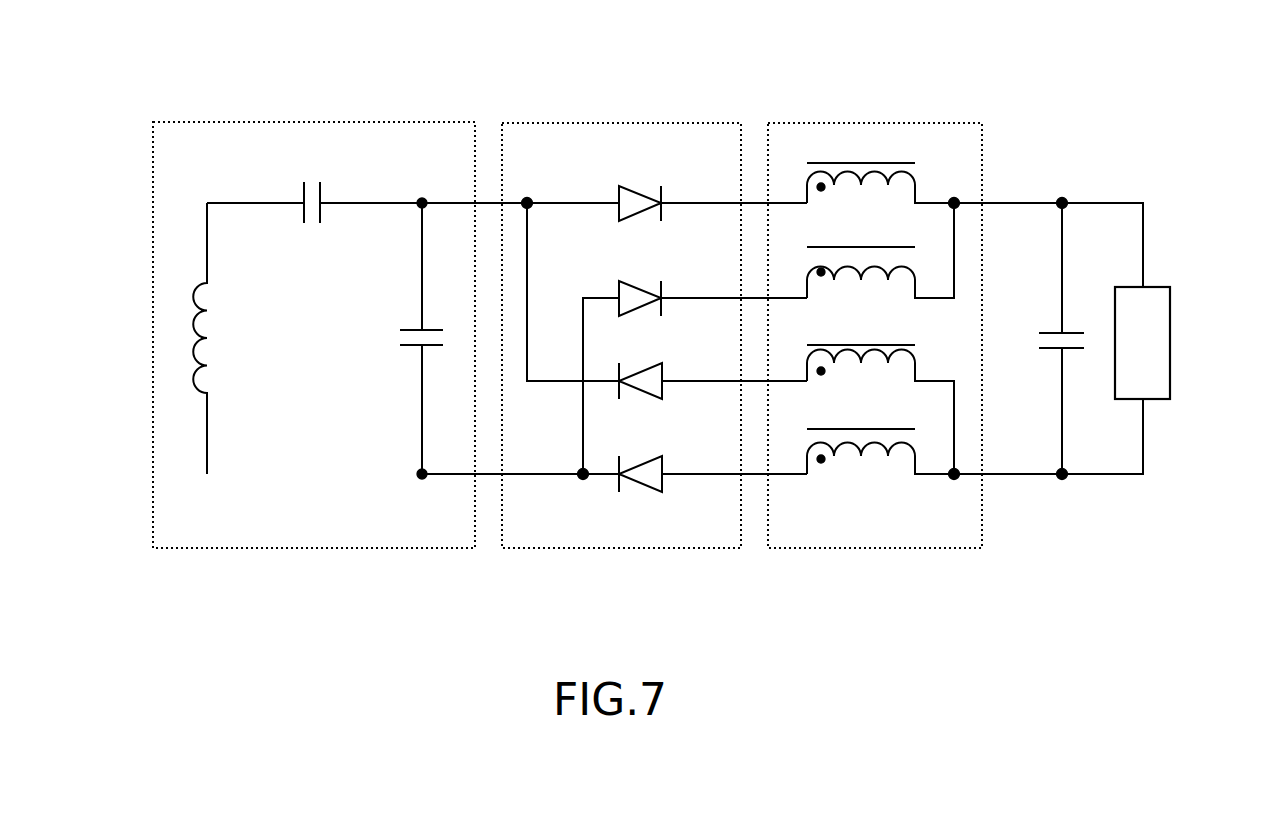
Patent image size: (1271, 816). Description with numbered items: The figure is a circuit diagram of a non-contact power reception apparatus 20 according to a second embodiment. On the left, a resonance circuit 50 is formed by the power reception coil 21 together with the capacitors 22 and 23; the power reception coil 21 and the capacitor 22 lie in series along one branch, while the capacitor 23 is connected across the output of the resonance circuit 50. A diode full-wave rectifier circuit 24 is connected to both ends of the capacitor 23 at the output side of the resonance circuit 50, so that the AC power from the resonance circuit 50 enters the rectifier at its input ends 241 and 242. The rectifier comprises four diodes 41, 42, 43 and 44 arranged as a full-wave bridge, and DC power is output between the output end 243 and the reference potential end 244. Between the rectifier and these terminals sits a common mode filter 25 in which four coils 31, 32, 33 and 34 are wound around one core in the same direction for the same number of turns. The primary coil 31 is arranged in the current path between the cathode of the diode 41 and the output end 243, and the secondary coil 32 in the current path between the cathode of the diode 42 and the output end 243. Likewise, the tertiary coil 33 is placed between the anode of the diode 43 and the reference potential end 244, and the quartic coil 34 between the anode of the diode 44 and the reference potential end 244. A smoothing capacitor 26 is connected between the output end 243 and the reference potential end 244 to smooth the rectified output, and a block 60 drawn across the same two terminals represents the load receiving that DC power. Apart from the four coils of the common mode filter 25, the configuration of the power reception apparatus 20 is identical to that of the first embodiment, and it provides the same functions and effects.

The power reception apparatus 20 is at (522, 52).
The resonance circuit 50 is at (311, 122).
The power reception coil 21 is at (185, 348).
The capacitor 22 is at (312, 226).
The capacitor 23 is at (385, 340).
The diode full-wave rectifier circuit 24 is at (636, 123).
The input end 241 is at (527, 196).
The input end 242 is at (583, 482).
The diode 41 is at (622, 186).
The diode 42 is at (622, 280).
The diode 43 is at (688, 348).
The diode 44 is at (670, 456).
The common mode filter 25 is at (893, 123).
The primary coil 31 is at (858, 178).
The secondary coil 32 is at (858, 272).
The tertiary coil 33 is at (858, 368).
The quartic coil 34 is at (858, 460).
The output end 243 is at (954, 196).
The reference potential end 244 is at (952, 484).
The smoothing capacitor 26 is at (1047, 313).
The load 60 is at (1172, 310).